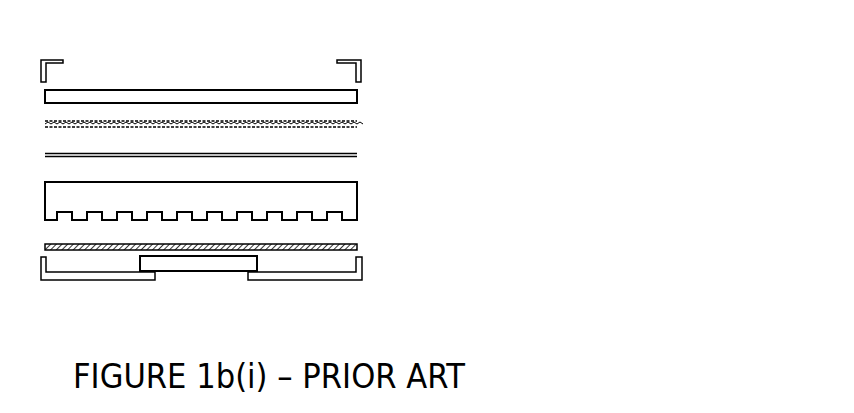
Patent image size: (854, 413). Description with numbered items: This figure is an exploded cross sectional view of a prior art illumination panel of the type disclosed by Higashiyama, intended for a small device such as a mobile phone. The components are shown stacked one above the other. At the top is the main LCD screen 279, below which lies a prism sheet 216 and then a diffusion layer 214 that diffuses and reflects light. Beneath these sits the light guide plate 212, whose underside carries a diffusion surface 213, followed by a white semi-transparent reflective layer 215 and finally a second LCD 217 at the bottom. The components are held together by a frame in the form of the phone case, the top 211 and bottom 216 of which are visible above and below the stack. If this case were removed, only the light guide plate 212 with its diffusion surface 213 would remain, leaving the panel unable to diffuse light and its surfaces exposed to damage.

The top of the phone case 211 is at (361, 63).
The main LCD screen 279 is at (357, 97).
The prism sheet 216 is at (357, 124).
The diffusion layer 214 is at (357, 155).
The light guide plate 212 is at (357, 192).
The diffusion surface 213 is at (357, 220).
The white semi-transparent reflective layer 215 is at (357, 247).
The second LCD 217 is at (257, 262).